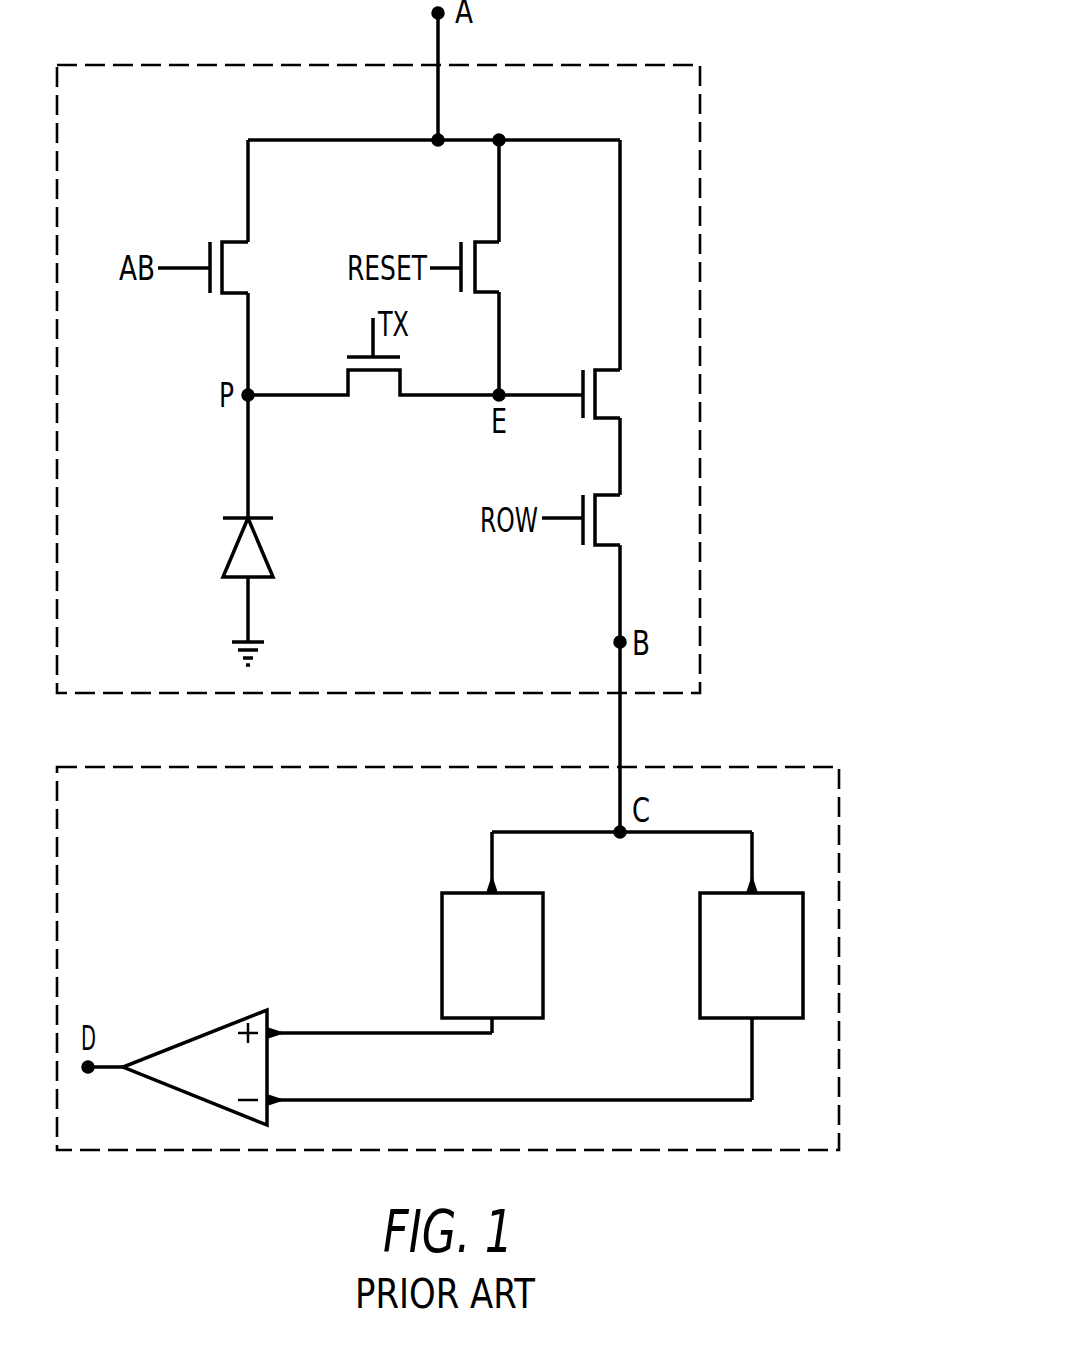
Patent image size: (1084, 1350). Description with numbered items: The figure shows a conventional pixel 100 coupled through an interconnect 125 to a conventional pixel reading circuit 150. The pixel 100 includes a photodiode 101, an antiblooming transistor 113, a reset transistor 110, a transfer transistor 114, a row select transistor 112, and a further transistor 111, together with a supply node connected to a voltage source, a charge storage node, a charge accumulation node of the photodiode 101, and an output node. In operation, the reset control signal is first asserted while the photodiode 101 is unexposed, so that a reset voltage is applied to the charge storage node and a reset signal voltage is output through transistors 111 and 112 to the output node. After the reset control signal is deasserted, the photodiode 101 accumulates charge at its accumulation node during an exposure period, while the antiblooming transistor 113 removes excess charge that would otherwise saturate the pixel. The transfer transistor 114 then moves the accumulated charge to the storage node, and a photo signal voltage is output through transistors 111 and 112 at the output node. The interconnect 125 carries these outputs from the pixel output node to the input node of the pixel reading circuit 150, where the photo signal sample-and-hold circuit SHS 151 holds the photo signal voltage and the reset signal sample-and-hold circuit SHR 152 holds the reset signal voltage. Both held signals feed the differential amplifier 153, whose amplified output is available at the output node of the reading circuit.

The pixel 100 is at (710, 97).
The photodiode 101 is at (252, 555).
The reset transistor 110 is at (477, 257).
The transistor 111 is at (598, 383).
The row select transistor 112 is at (598, 508).
The antiblooming transistor 113 is at (224, 260).
The transfer transistor 114 is at (382, 372).
The interconnect 125 is at (627, 745).
The pixel reading circuit 150 is at (850, 795).
The photo signal sample-and-hold circuit SHS 151 is at (515, 995).
The reset signal sample-and-hold circuit SHR 152 is at (775, 995).
The differential amplifier 153 is at (224, 1080).